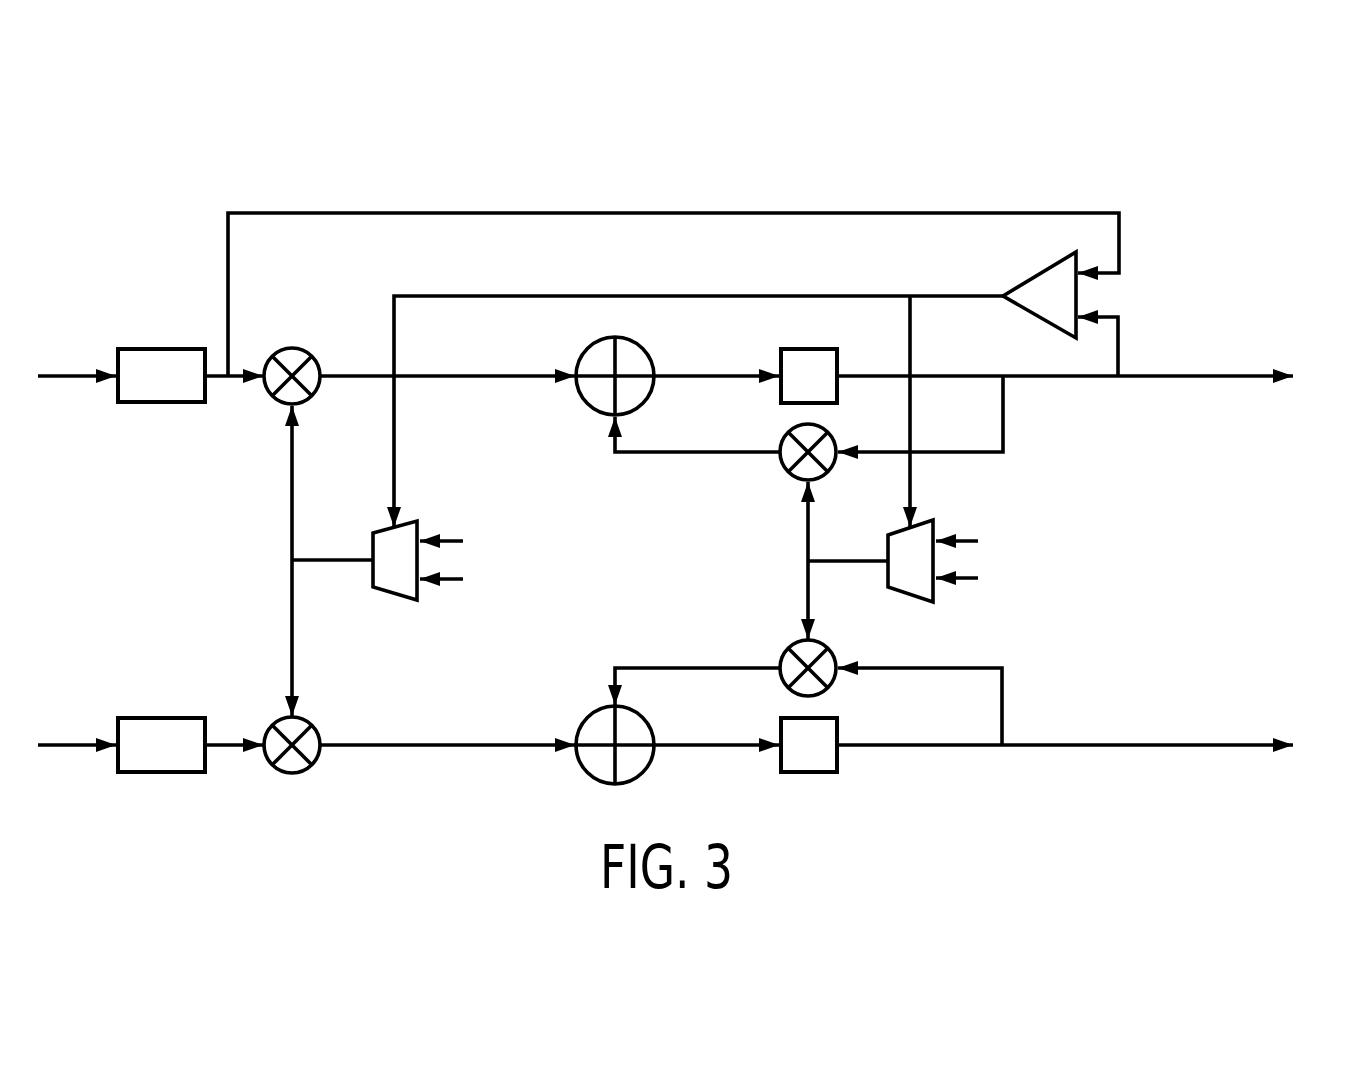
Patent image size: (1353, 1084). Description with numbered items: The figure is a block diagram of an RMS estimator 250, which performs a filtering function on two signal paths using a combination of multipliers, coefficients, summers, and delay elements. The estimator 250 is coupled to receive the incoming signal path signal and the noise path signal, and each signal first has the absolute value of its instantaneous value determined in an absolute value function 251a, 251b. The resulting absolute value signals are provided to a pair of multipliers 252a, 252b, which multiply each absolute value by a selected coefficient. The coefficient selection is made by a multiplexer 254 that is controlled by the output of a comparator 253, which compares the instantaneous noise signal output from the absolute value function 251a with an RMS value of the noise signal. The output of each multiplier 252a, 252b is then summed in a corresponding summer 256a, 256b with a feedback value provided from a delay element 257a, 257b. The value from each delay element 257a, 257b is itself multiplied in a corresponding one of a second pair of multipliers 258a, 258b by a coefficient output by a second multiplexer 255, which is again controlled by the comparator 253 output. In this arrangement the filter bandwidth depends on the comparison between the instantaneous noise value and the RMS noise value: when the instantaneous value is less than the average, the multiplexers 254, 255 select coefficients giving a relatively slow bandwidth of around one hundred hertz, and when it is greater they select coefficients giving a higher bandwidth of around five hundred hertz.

The RMS estimator 250 is at (252, 100).
The absolute value function 251a is at (163, 402).
The absolute value function 251b is at (162, 718).
The multiplier 252a is at (293, 348).
The multiplier 252b is at (293, 774).
The comparator 253 is at (1035, 277).
The multiplexer 254 is at (393, 593).
The multiplexer 255 is at (907, 593).
The summer 256a is at (587, 404).
The summer 256b is at (587, 717).
The delay element 257a is at (808, 349).
The delay element 257b is at (808, 772).
The multiplier 258a is at (789, 472).
The multiplier 258b is at (789, 649).